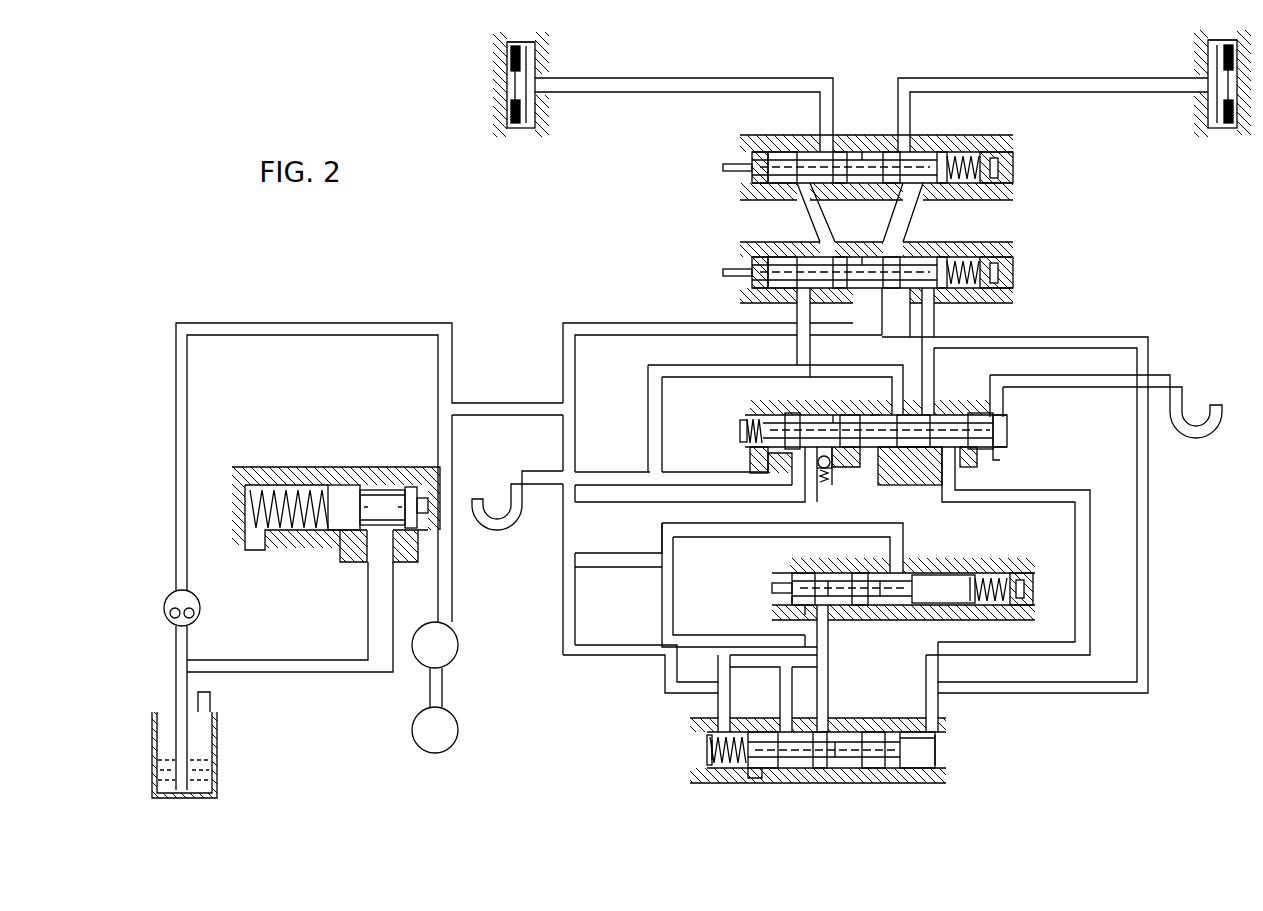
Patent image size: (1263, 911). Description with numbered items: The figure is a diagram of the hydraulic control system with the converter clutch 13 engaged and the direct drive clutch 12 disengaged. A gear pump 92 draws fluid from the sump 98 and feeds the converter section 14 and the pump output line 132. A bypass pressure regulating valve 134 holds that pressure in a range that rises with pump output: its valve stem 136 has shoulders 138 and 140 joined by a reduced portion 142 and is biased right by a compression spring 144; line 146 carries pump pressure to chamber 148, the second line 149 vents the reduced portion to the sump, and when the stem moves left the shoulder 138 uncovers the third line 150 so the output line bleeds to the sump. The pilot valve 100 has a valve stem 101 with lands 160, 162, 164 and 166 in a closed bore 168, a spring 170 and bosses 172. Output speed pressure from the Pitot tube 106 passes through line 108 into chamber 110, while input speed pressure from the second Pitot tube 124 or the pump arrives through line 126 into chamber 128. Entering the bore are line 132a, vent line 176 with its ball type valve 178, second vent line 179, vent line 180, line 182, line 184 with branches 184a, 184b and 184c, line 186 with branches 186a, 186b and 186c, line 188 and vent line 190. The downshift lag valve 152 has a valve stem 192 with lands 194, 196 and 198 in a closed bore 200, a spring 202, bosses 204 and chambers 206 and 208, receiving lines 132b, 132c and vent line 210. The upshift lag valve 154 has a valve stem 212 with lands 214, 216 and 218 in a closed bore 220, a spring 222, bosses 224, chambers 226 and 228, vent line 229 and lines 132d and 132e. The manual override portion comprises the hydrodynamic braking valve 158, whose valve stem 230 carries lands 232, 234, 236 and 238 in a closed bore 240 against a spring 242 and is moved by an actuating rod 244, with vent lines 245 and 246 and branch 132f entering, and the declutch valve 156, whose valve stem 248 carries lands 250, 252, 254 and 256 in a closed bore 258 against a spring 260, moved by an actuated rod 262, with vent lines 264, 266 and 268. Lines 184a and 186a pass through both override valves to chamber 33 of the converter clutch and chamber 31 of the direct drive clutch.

The direct drive clutch 12 is at (1205, 120).
The torque converter clutch 13 is at (490, 120).
The converter section 14 is at (459, 694).
The chamber of direct drive clutch 31 is at (1208, 58).
The chamber of converter clutch 33 is at (536, 60).
The gear pump 92 is at (170, 598).
The sump 98 is at (217, 746).
The pilot valve 100 is at (889, 445).
The valve stem 101 is at (873, 413).
The Pitot tube 106 is at (1195, 438).
The line 108 is at (1083, 387).
The chamber 110 is at (1001, 452).
The second Pitot tube 124 is at (503, 533).
The line 126 is at (612, 472).
The chamber 128 is at (756, 450).
The pump output line 132 is at (176, 383).
The line 132a is at (792, 480).
The line 132b is at (614, 558).
The line 132c is at (872, 618).
The line 132d is at (718, 713).
The line 132e is at (800, 668).
The branch of pump output line 132f is at (622, 324).
The bypass pressure regulating valve 134 is at (325, 506).
The valve stem 136 is at (378, 489).
The shoulder 138 is at (338, 488).
The shoulder 140 is at (409, 487).
The reduced portion 142 is at (383, 507).
The compression spring 144 is at (286, 531).
The line 146 is at (406, 562).
The chamber 148 is at (422, 497).
The second line 149 is at (375, 640).
The third line 150 is at (352, 562).
The downshift lag valve 152 is at (895, 584).
The upshift lag valve 154 is at (841, 755).
The declutch valve 156 is at (889, 161).
The hydrodynamic braking valve 158 is at (898, 265).
The land 160 is at (975, 413).
The land 162 is at (913, 430).
The land 164 is at (845, 415).
The land 166 is at (790, 412).
The closed bore 168 is at (935, 414).
The spring 170 is at (750, 418).
The bosses 172 is at (740, 437).
The vent line 176 is at (818, 478).
The ball type valve 178 is at (826, 485).
The second vent line 179 is at (835, 414).
The vent line 180 is at (830, 470).
The line 182 is at (990, 541).
The line 184 is at (708, 366).
The branch line 184a is at (797, 351).
The branch line 184b is at (912, 552).
The branch line 184c is at (672, 613).
The line 186 is at (921, 364).
The branch line 186a is at (942, 326).
The branch line 186b is at (838, 715).
The branch line 186c is at (830, 624).
The line 188 is at (945, 477).
The vent line 190 is at (978, 463).
The valve stem 192 is at (895, 582).
The land 194 is at (943, 589).
The land 196 is at (860, 574).
The land 198 is at (797, 574).
The closed bore 200 is at (828, 580).
The spring 202 is at (988, 580).
The bosses 204 is at (775, 586).
The chamber 206 is at (780, 601).
The chamber 208 is at (1020, 606).
The vent line 210 is at (802, 606).
The valve stem 212 is at (840, 771).
The land 214 is at (768, 741).
The land 216 is at (820, 769).
The land 218 is at (913, 770).
The closed bore 220 is at (856, 769).
The spring 222 is at (722, 770).
The bosses 224 is at (708, 763).
The chamber 226 is at (708, 741).
The chamber 228 is at (926, 736).
The vent line 229 is at (752, 778).
The valve stem 230 is at (890, 295).
The land 232 is at (782, 257).
The land 234 is at (840, 257).
The land 236 is at (891, 262).
The land 238 is at (937, 257).
The closed bore 240 is at (960, 260).
The spring 242 is at (990, 262).
The actuating rod 244 is at (735, 269).
The vent line 245 is at (752, 292).
The vent line 246 is at (1004, 290).
The valve stem 248 is at (878, 190).
The land 250 is at (780, 152).
The land 252 is at (842, 152).
The land 254 is at (894, 150).
The land 256 is at (945, 155).
The closed bore 258 is at (825, 184).
The spring 260 is at (988, 160).
The actuated rod 262 is at (723, 165).
The vent line 264 is at (752, 188).
The vent line 266 is at (865, 150).
The vent line 268 is at (1003, 186).